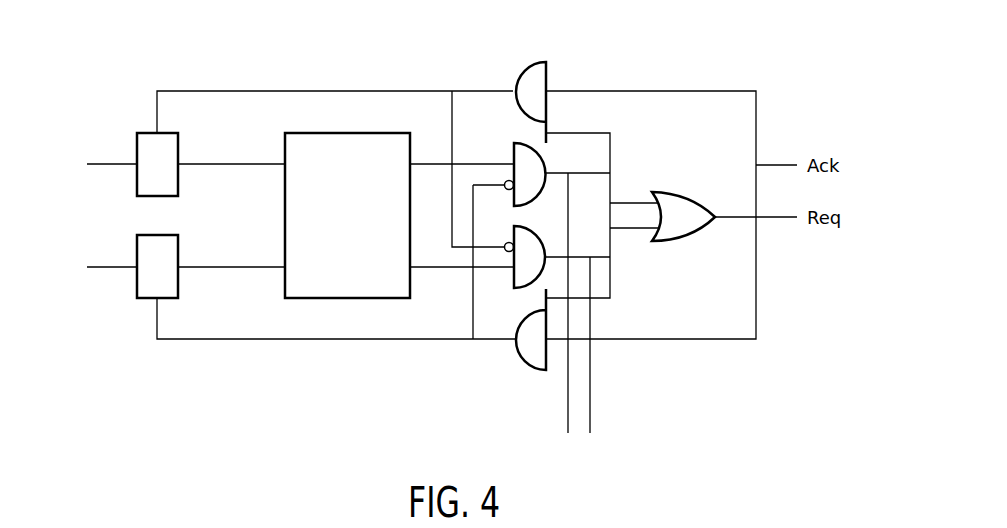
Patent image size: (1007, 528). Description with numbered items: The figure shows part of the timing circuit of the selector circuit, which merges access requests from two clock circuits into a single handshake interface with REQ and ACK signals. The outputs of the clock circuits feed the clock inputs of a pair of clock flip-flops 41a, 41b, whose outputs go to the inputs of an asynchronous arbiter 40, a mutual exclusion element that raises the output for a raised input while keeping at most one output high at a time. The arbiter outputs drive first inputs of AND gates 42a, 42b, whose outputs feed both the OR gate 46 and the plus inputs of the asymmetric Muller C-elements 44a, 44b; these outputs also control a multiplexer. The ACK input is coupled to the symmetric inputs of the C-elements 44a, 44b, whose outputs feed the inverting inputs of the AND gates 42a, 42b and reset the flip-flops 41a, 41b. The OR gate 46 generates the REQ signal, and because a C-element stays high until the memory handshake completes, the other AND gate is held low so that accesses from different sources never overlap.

The asynchronous arbiter 40 is at (323, 133).
The clock flip-flop 41a is at (136, 142).
The clock flip-flop 41b is at (136, 278).
The AND gate 42a is at (513, 147).
The AND gate 42b is at (513, 278).
The asymmetric Muller C-element 44a is at (549, 80).
The asymmetric Muller C-element 44b is at (548, 343).
The OR gate 46 is at (713, 207).